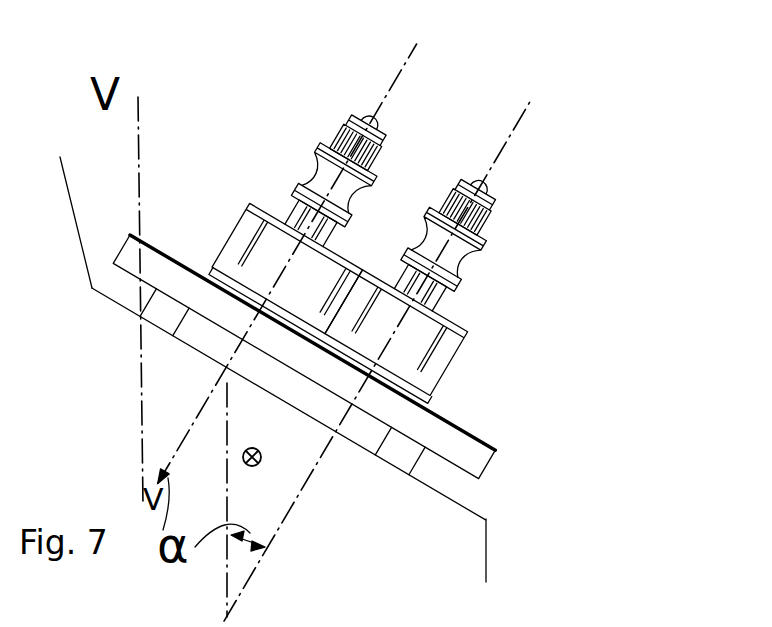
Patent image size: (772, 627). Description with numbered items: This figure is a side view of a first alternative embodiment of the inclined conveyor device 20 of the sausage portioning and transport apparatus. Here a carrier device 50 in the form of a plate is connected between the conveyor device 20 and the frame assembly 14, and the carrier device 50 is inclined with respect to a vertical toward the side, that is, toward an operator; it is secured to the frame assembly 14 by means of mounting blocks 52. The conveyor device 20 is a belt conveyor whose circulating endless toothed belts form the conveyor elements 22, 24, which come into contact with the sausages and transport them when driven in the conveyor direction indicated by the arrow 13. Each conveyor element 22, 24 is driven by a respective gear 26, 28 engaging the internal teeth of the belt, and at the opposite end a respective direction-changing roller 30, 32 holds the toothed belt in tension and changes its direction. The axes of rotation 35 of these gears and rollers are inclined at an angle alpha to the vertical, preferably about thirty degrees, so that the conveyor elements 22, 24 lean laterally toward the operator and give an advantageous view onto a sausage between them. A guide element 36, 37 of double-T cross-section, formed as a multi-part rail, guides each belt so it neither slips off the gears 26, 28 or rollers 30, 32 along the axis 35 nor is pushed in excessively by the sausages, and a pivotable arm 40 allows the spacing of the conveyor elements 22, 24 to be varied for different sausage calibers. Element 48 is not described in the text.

The arrow indicating conveyor direction 13 is at (261, 458).
The frame assembly 14 is at (492, 560).
The conveyor device 20 is at (612, 306).
The conveyor element 22 is at (317, 172).
The conveyor element 24 is at (463, 253).
The gear 26 is at (343, 124).
The gear 28 is at (483, 218).
The direction-changing roller 30 is at (365, 118).
The direction-changing roller 32 is at (490, 186).
The axis of rotation 35 is at (339, 316).
The guide element 36 is at (340, 142).
The guide element 37 is at (490, 205).
The pivotable arm 40 is at (442, 370).
The first housing block 48 is at (233, 233).
The carrier device 50 is at (490, 457).
The mounting block 52 is at (172, 322).